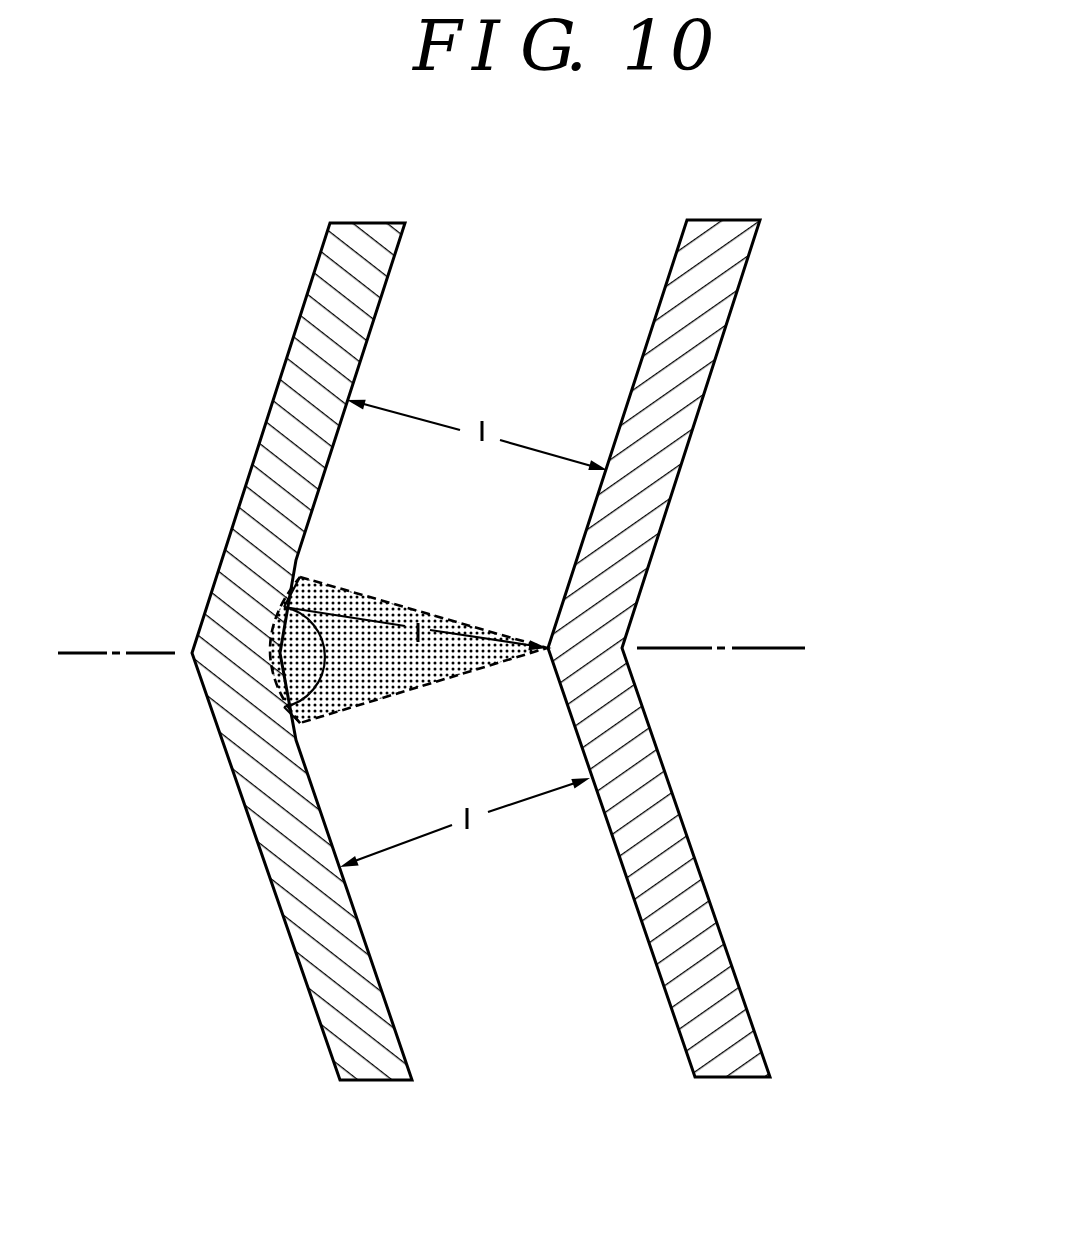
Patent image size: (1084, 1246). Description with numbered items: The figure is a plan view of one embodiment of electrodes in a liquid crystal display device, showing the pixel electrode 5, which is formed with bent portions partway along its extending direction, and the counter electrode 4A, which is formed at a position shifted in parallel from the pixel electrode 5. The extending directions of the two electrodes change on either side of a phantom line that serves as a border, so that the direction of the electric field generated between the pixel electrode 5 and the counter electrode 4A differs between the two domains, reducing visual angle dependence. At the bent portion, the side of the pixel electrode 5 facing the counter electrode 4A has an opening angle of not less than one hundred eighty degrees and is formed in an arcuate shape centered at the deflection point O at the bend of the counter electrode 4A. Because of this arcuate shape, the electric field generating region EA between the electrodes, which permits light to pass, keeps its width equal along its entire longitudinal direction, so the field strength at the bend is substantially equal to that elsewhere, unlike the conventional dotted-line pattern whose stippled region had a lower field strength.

The pixel electrode 5 is at (282, 888).
The counter electrode 4A is at (695, 892).
The electric field generating region EA is at (473, 669).
The deflection point O is at (409, 650).